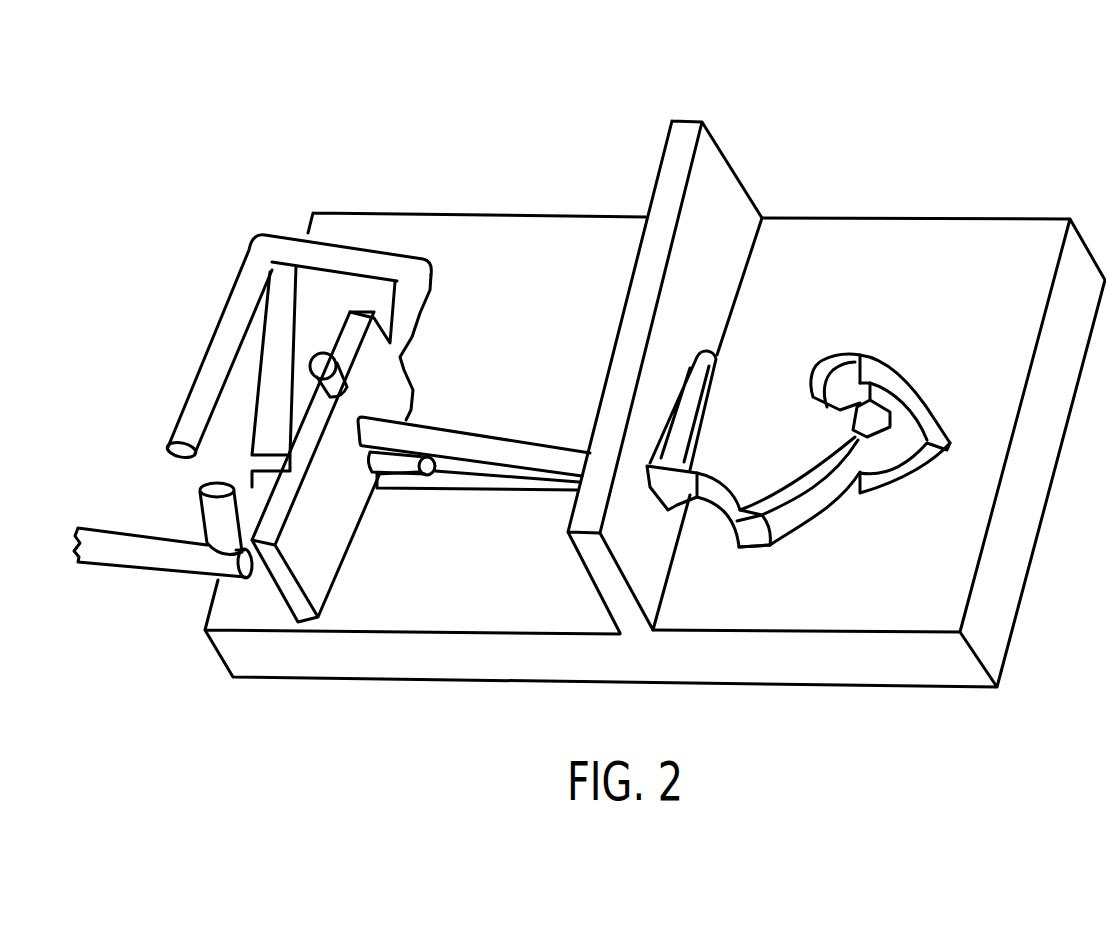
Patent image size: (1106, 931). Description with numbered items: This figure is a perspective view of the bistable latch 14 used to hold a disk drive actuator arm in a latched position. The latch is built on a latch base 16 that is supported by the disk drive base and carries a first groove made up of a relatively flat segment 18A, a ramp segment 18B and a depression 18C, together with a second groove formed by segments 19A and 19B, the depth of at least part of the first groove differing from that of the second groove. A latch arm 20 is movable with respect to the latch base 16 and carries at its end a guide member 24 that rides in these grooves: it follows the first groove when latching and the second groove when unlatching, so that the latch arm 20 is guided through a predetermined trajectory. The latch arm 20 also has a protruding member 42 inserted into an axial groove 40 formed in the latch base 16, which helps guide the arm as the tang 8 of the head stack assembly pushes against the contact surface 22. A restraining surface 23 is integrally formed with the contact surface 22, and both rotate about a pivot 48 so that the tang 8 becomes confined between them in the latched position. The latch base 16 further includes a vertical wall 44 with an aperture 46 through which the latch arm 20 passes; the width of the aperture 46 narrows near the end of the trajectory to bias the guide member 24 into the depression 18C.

The tang 8 is at (115, 558).
The bistable latch 14 is at (236, 123).
The latch base 16 is at (970, 222).
The flat segment 18A is at (840, 493).
The ramp segment 18B is at (867, 427).
The depression 18C is at (847, 408).
The second groove segment 19A is at (918, 415).
The second groove segment 19B is at (902, 474).
The latch arm 20 is at (483, 440).
The contact surface 22 is at (275, 583).
The restraining surface 23 is at (230, 383).
The guide member 24 is at (755, 540).
The axial groove 40 is at (494, 484).
The protruding member 42 is at (390, 478).
The vertical wall 44 is at (723, 178).
The aperture 46 is at (689, 367).
The pivot 48 is at (320, 357).